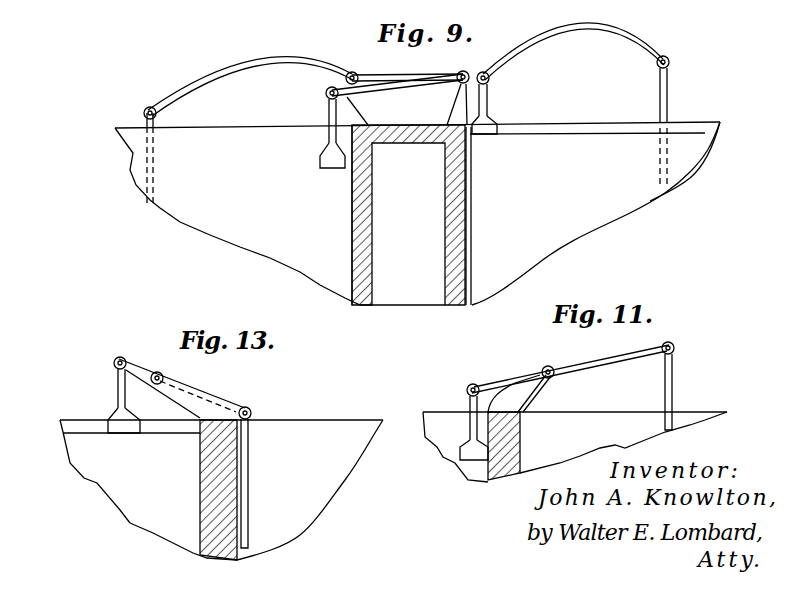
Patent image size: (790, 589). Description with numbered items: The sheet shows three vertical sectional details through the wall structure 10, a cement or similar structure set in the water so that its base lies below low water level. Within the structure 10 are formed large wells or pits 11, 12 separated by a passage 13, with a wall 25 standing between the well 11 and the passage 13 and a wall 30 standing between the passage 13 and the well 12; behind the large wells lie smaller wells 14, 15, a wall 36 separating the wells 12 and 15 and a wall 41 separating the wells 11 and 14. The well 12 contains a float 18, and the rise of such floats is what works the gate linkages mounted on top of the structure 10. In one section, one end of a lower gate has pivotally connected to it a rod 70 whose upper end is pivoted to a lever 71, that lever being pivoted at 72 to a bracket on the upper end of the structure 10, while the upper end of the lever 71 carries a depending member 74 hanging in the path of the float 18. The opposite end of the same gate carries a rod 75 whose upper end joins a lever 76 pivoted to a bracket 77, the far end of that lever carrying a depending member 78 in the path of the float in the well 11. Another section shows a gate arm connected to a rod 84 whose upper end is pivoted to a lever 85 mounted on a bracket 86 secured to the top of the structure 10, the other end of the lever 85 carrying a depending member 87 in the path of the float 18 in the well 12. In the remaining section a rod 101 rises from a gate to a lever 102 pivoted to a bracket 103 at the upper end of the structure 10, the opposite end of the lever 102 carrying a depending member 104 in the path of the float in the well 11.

In FIG. 9, the wall structure 10 is at (603, 122).
In FIG. 13, the wall structure 10 is at (297, 417).
In FIG. 9, the well or pit 11 is at (225, 228).
In FIG. 9, the well or pit 12 is at (706, 128).
In FIG. 13, the well or pit 12 is at (63, 429).
In FIG. 9, the passage 13 is at (407, 297).
In FIG. 11, the smaller well 14 is at (613, 422).
In FIG. 13, the smaller well 15 is at (322, 492).
In FIG. 9, the float 18 is at (578, 218).
In FIG. 13, the float 18 is at (112, 490).
In FIG. 9, the wall 25 is at (364, 299).
In FIG. 9, the wall 30 is at (463, 304).
In FIG. 13, the wall 36 is at (213, 528).
In FIG. 11, the wall 41 is at (505, 474).
In FIG. 13, the rod 70 is at (250, 466).
In FIG. 13, the lever 71 is at (148, 372).
In FIG. 13, the pivot 72 is at (181, 393).
In FIG. 13, the depending member 74 is at (112, 413).
In FIG. 9, the rod 75 is at (668, 96).
In FIG. 9, the lever 76 is at (396, 86).
In FIG. 9, the bracket 77 is at (461, 99).
In FIG. 9, the depending member 78 is at (330, 163).
In FIG. 9, the rod 84 is at (158, 122).
In FIG. 9, the lever 85 is at (268, 65).
In FIG. 9, the bracket 86 is at (357, 106).
In FIG. 9, the depending member 87 is at (494, 119).
In FIG. 11, the rod 101 is at (676, 389).
In FIG. 11, the lever 102 is at (590, 355).
In FIG. 11, the bracket 103 is at (537, 387).
In FIG. 11, the depending member 104 is at (463, 457).